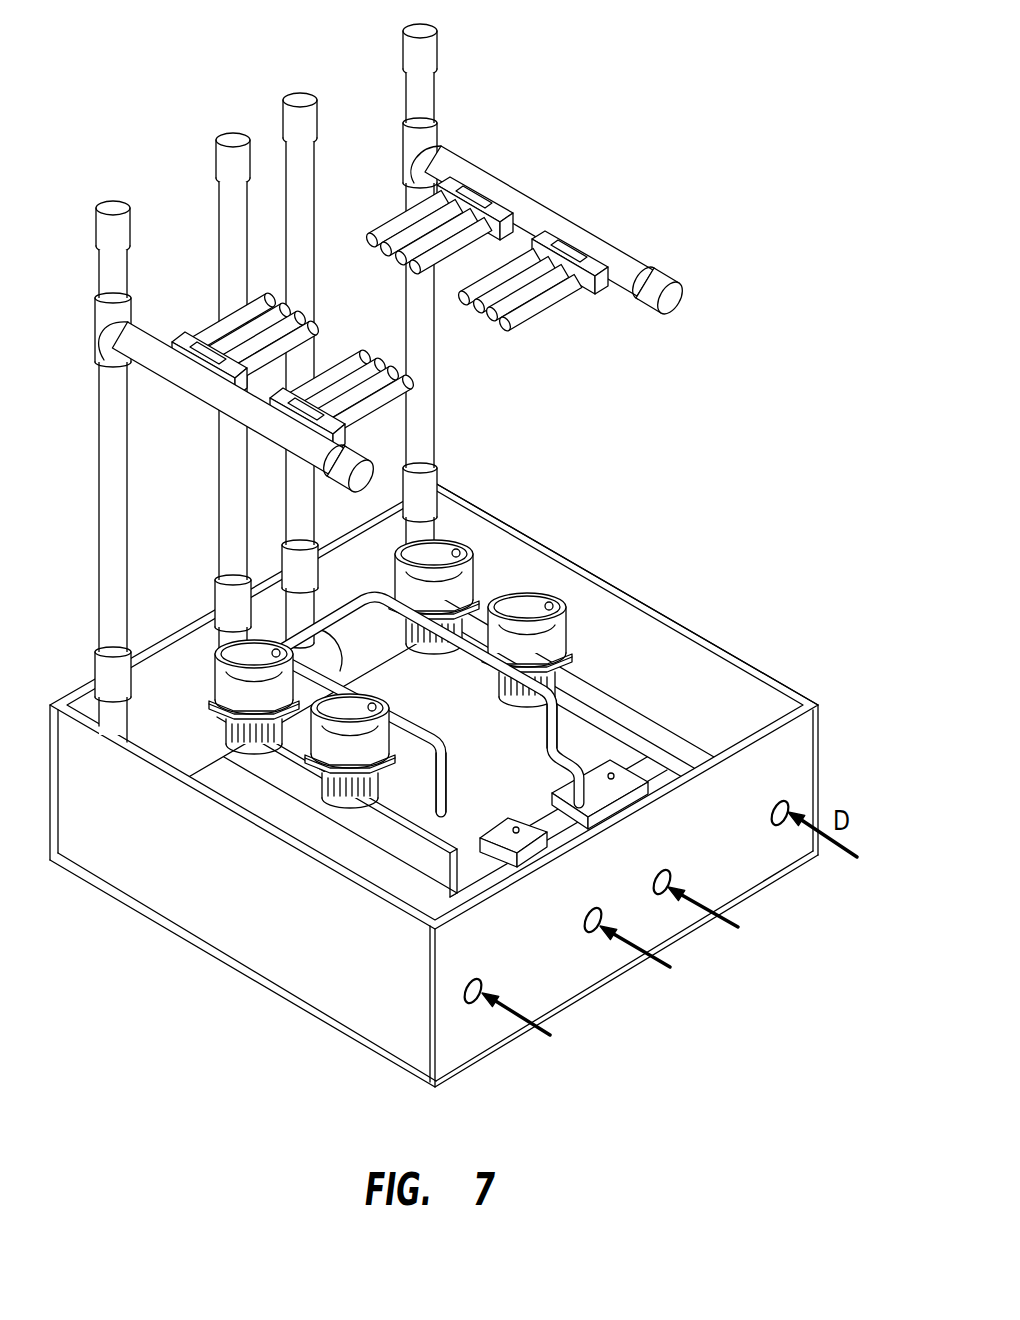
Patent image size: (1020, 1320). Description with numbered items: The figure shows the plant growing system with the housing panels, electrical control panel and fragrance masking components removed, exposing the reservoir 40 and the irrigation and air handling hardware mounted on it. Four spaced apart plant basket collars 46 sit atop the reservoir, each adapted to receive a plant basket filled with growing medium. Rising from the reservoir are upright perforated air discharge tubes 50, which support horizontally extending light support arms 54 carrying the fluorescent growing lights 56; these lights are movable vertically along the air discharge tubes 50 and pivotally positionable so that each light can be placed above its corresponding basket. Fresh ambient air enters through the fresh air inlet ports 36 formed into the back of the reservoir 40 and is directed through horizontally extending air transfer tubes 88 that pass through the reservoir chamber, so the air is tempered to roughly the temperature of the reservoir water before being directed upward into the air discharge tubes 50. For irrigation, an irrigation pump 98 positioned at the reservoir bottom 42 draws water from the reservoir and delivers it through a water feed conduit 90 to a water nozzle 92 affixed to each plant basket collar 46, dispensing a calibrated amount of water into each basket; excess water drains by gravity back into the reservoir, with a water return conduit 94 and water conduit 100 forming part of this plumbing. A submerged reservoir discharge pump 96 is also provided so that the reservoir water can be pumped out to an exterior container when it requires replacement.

The fresh air inlet port 36 is at (783, 800).
The reservoir 40 is at (257, 986).
The reservoir bottom 42 is at (633, 603).
The plant basket collar 46 is at (549, 598).
The perforated air discharge tube 50 is at (434, 87).
The light support arm 54 is at (548, 211).
The fluorescent growing light 56 is at (398, 241).
The air transfer tube 88 is at (637, 712).
The water feed conduit 90 is at (548, 728).
The water nozzle 92 is at (502, 598).
The water return conduit 94 is at (447, 785).
The reservoir discharge pump 96 is at (452, 883).
The irrigation pump 98 is at (630, 782).
The water conduit 100 is at (340, 612).